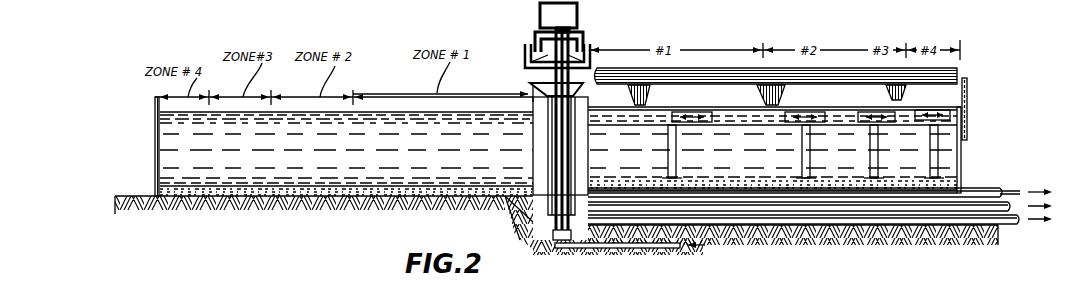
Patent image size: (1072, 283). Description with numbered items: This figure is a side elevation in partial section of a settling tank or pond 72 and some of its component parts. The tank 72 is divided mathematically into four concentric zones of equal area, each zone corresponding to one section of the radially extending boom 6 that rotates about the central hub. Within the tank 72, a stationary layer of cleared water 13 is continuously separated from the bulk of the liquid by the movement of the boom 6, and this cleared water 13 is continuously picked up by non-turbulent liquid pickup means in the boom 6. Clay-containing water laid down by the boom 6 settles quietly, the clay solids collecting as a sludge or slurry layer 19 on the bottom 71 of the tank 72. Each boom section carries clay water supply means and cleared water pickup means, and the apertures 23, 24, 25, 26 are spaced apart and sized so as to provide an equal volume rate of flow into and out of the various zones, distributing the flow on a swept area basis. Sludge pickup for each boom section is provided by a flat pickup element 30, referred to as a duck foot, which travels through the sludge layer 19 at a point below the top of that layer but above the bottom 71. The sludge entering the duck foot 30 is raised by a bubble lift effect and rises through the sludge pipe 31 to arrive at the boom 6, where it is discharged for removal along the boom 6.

The boom 6 is at (614, 68).
The cleared water layer 13 is at (392, 112).
The sludge layer 19 is at (375, 186).
The aperture 23 is at (699, 112).
The aperture 24 is at (790, 112).
The aperture 25 is at (858, 112).
The aperture 26 is at (945, 108).
The flat pickup element 30 is at (670, 152).
The sludge pipe 31 is at (692, 153).
The tank bottom 71 is at (207, 198).
The tank 72 is at (153, 153).